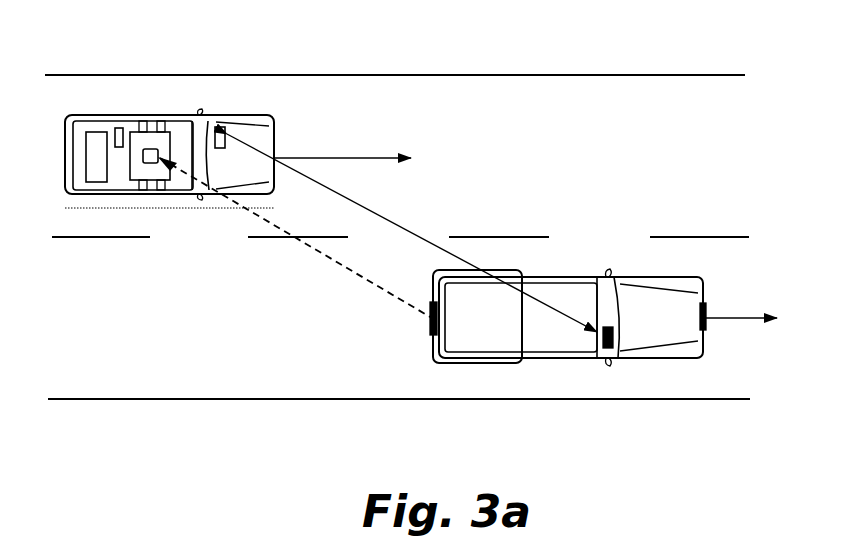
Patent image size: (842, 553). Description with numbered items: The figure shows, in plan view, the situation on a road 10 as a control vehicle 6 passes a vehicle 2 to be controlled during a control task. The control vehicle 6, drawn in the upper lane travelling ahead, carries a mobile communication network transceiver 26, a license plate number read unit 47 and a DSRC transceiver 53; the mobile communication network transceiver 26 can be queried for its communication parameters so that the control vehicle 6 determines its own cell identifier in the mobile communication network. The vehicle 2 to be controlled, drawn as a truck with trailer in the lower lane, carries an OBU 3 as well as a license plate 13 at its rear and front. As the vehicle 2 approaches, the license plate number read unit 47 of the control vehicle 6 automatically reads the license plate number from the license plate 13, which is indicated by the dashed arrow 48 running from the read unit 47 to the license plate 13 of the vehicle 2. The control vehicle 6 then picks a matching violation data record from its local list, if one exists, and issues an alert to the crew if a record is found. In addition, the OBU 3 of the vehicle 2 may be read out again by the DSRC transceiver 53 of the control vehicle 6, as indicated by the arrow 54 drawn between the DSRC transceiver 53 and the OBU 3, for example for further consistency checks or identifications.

The vehicle 2 is at (543, 355).
The OBU 3 is at (615, 357).
The control vehicle 6 is at (112, 117).
The road 10 is at (118, 399).
The license plate 13 is at (428, 326).
The mobile communication network transceiver 26 is at (120, 130).
The license plate number read unit 47 is at (151, 152).
The arrow 48 is at (350, 270).
The DSRC transceiver 53 is at (220, 126).
The arrow 54 is at (400, 227).